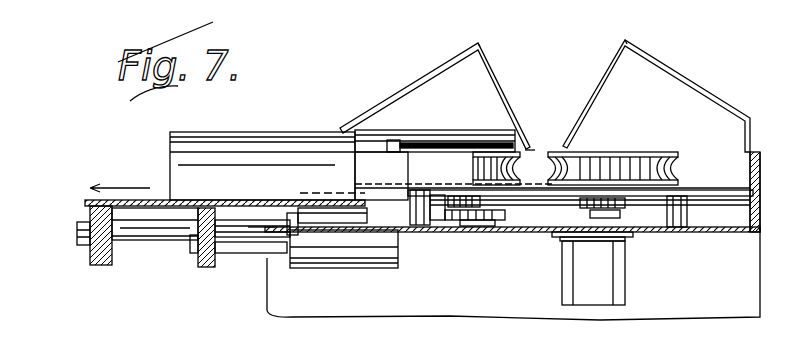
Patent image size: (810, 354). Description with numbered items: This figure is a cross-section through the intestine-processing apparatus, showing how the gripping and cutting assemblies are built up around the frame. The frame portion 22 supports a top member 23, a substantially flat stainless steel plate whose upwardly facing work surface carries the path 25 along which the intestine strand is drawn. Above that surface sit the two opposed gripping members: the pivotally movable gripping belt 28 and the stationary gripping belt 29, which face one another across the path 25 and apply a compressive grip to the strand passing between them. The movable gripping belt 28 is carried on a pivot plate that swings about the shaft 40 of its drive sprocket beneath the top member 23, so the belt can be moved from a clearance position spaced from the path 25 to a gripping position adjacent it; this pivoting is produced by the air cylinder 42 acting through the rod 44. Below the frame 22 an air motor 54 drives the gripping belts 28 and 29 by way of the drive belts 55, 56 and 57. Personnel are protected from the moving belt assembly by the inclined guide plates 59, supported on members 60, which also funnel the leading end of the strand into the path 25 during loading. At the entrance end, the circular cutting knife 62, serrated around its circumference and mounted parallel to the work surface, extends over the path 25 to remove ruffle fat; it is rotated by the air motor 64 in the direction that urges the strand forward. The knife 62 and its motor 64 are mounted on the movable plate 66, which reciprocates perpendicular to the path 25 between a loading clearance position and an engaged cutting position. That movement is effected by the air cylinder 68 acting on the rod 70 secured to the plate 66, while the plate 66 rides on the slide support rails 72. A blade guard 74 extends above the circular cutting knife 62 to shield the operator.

The frame portion 22 is at (736, 233).
The top member 23 is at (680, 194).
The path 25 is at (535, 163).
The pivotally movable gripping belt 28 is at (475, 165).
The stationary gripping belt 29 is at (628, 150).
The shaft 40 is at (480, 215).
The air cylinder 42 is at (320, 218).
The rod 44 is at (392, 172).
The air motor 54 is at (612, 295).
The drive belt 55 is at (553, 215).
The drive belt 56 is at (615, 202).
The drive belt 57 is at (517, 213).
The inclined guide plates 59 is at (620, 53).
The members 60 is at (410, 88).
The circular cutting knife 62 is at (412, 143).
The air motor 64 is at (238, 148).
The movable plate 66 is at (85, 201).
The air cylinder 68 is at (357, 258).
The rod 70 is at (242, 254).
The slide support rails 72 is at (146, 240).
The blade guard 74 is at (477, 130).